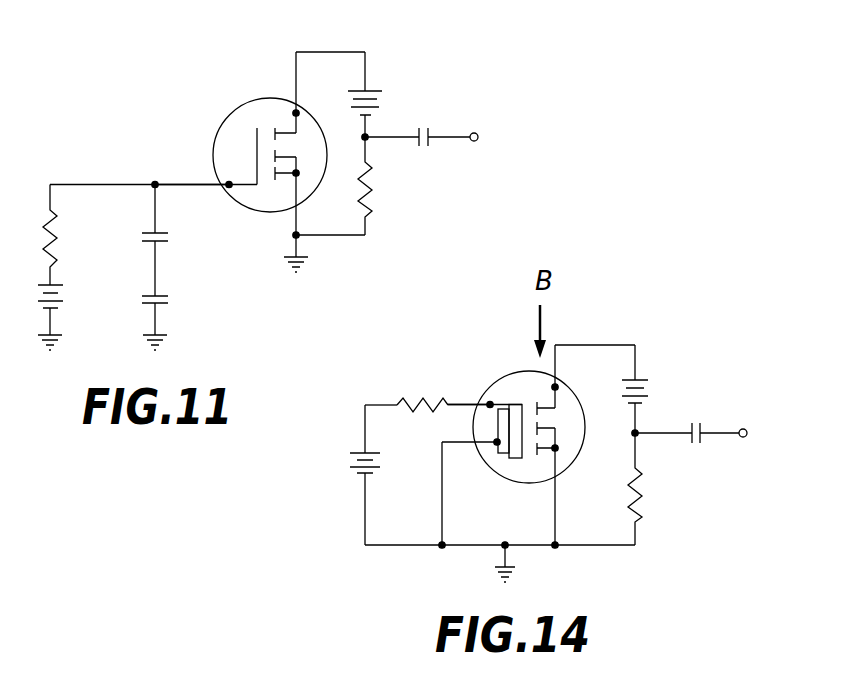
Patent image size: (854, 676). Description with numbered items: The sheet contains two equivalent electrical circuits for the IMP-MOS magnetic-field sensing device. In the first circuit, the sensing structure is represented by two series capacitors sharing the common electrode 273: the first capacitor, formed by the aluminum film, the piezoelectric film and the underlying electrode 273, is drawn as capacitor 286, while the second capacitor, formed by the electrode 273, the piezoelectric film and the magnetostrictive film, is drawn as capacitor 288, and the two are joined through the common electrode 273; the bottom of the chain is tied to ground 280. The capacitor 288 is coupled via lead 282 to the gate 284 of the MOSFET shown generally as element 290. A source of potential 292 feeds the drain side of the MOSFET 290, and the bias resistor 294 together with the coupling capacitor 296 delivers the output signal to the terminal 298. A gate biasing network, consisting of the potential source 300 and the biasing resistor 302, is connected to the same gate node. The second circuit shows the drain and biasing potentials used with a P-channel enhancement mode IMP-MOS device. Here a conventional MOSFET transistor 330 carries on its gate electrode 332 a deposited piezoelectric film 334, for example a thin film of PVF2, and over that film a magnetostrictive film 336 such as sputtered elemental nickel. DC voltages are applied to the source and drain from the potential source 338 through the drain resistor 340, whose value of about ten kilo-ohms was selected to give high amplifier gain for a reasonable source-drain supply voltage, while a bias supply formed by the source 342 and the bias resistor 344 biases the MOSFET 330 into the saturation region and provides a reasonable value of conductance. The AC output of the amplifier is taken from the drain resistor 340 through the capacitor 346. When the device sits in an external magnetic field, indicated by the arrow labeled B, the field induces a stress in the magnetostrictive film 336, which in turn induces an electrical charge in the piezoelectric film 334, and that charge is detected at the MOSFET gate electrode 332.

In FIG. 11, the electrode 273 is at (160, 268).
In FIG. 11, the ground 280 is at (158, 323).
In FIG. 11, the lead 282 is at (172, 184).
In FIG. 11, the gate 284 is at (257, 143).
In FIG. 11, the capacitor 286 is at (168, 293).
In FIG. 11, the capacitor 288 is at (163, 232).
In FIG. 11, the MOSFET 290 is at (256, 90).
In FIG. 11, the source of potential 292 is at (378, 90).
In FIG. 11, the bias resistor 294 is at (377, 197).
In FIG. 11, the coupling capacitor 296 is at (428, 146).
In FIG. 11, the terminal 298 is at (478, 132).
In FIG. 11, the potential source 300 is at (70, 270).
In FIG. 11, the biasing resistor 302 is at (58, 225).
In FIG. 14, the MOSFET transistor 330 is at (505, 364).
In FIG. 14, the gate electrode 332 is at (520, 458).
In FIG. 14, the piezoelectric film 334 is at (513, 458).
In FIG. 14, the magnetostrictive film 336 is at (498, 420).
In FIG. 14, the potential source 338 is at (645, 372).
In FIG. 14, the drain resistor 340 is at (643, 500).
In FIG. 14, the source 342 is at (357, 478).
In FIG. 14, the bias resistor 344 is at (408, 397).
In FIG. 14, the capacitor 346 is at (708, 418).